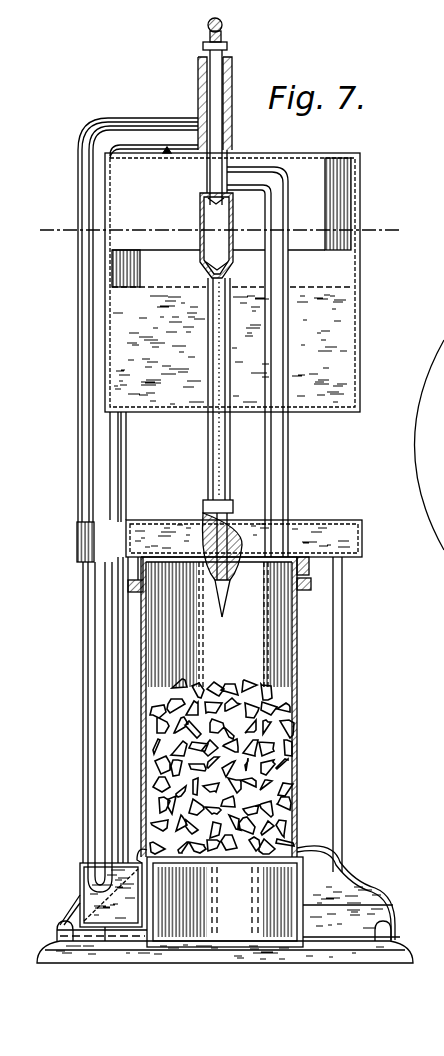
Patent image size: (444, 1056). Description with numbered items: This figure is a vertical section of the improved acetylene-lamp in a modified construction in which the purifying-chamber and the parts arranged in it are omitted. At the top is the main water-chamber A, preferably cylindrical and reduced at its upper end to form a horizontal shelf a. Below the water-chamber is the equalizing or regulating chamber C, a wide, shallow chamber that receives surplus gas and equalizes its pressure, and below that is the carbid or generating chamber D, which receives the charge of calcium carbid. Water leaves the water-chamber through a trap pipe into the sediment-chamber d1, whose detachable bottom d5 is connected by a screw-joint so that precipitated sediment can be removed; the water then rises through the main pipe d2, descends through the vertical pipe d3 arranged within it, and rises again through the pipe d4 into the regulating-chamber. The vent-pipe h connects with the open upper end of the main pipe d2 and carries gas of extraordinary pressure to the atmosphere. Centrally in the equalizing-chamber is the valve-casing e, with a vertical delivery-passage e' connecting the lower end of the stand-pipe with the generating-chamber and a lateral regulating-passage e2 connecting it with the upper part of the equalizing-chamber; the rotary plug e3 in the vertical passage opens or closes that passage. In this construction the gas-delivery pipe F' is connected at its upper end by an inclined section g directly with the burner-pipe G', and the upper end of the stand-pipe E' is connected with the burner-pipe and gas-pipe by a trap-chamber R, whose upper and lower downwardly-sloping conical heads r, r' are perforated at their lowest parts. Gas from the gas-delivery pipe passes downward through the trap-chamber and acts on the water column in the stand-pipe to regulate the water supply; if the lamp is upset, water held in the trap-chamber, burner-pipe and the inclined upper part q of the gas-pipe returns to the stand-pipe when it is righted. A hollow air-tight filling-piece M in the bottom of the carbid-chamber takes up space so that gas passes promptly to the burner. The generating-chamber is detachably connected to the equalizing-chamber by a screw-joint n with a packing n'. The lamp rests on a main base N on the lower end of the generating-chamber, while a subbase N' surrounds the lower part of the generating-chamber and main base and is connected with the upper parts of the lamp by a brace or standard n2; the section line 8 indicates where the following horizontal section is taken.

The inclined section g is at (222, 38).
The burner-pipe G' is at (230, 121).
The vent-pipe h is at (137, 340).
The main water-chamber A is at (232, 278).
The section line 8 8 is at (218, 233).
The trap-chamber R is at (205, 243).
The upper conical head r is at (216, 207).
The lower conical head r' is at (217, 259).
The upper part of the gas-pipe q is at (250, 180).
The gas-delivery pipe F' is at (285, 369).
The stand-pipe E' is at (205, 389).
The horizontal shelf a is at (122, 467).
The lateral regulating-passage e2 is at (204, 510).
The valve-casing e is at (232, 539).
The rotary plug e3 is at (212, 574).
The vertical delivery-passage e' is at (237, 595).
The equalizing or regulating chamber C is at (362, 535).
The screw-joint n is at (308, 569).
The packing n' is at (312, 593).
The brace or standard n2 is at (343, 735).
The carbid or generating chamber D is at (219, 707).
The hollow air-tight filling-piece M is at (225, 902).
The subbase N' is at (228, 893).
The main base N is at (239, 942).
The sediment-chamber d1 is at (111, 895).
The bottom of the sediment-chamber d5 is at (112, 928).
The main pipe d2 is at (95, 786).
The vertical pipe d3 is at (108, 708).
The pipe d4 is at (88, 653).